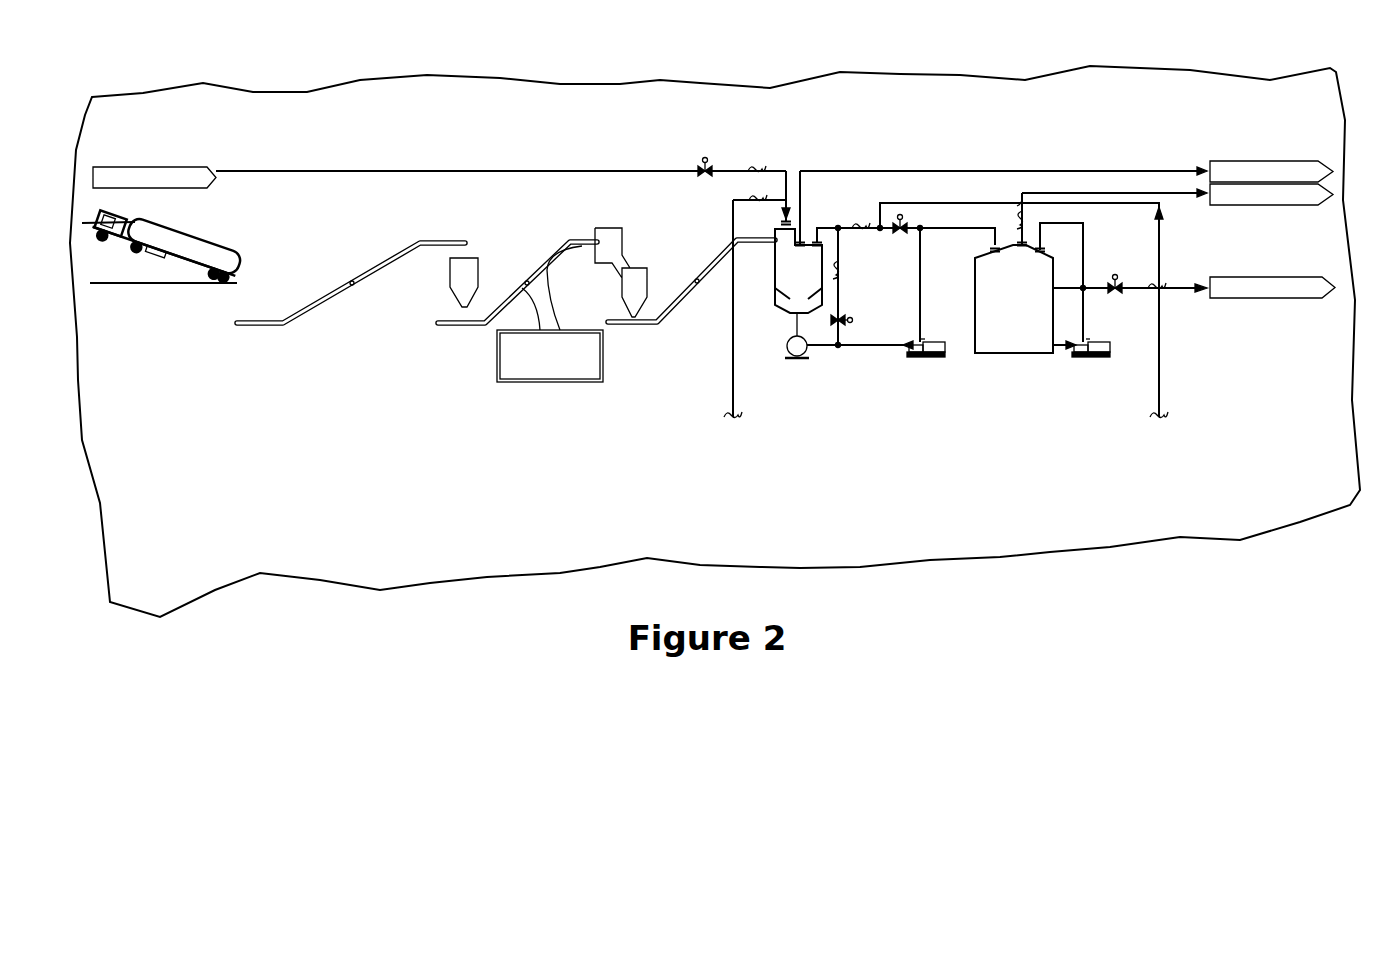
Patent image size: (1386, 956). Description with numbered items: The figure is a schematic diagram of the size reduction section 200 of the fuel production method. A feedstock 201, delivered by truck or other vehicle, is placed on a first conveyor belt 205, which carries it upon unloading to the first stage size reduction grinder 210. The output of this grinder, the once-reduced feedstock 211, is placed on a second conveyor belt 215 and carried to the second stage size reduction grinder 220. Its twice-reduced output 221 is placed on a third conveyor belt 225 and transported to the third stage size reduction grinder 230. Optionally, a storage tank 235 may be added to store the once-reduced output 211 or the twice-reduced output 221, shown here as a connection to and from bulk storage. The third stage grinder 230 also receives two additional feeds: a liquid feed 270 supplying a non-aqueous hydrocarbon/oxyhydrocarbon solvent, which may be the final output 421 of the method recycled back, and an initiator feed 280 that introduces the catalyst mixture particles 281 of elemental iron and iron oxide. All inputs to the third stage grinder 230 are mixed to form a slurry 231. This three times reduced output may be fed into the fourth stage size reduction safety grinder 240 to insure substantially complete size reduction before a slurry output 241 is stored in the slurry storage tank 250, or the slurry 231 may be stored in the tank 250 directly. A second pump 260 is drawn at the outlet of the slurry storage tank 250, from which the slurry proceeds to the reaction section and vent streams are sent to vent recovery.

The size reduction section 200 is at (650, 111).
The feedstock 201 is at (468, 258).
The first conveyor belt 205 is at (322, 302).
The first stage size reduction grinder 210 is at (462, 279).
The once-reduced feedstock 211 is at (465, 283).
The second conveyor belt 215 is at (563, 252).
The second stage size reduction grinder 220 is at (632, 280).
The twice-reduced output 221 is at (634, 300).
The third conveyor belt 225 is at (708, 268).
The third stage size reduction grinder 230 is at (798, 295).
The slurry 231 is at (782, 297).
The storage tank 235 is at (545, 382).
The fourth stage size reduction safety grinder 240 is at (928, 358).
The slurry output 241 is at (918, 268).
The slurry storage tank 250 is at (1010, 336).
The second pump 260 is at (1100, 358).
The liquid feed 270 is at (733, 322).
The initiator feed 280 is at (300, 171).
The catalyst mixture particles 281 is at (128, 166).
The final output 421 is at (1240, 277).